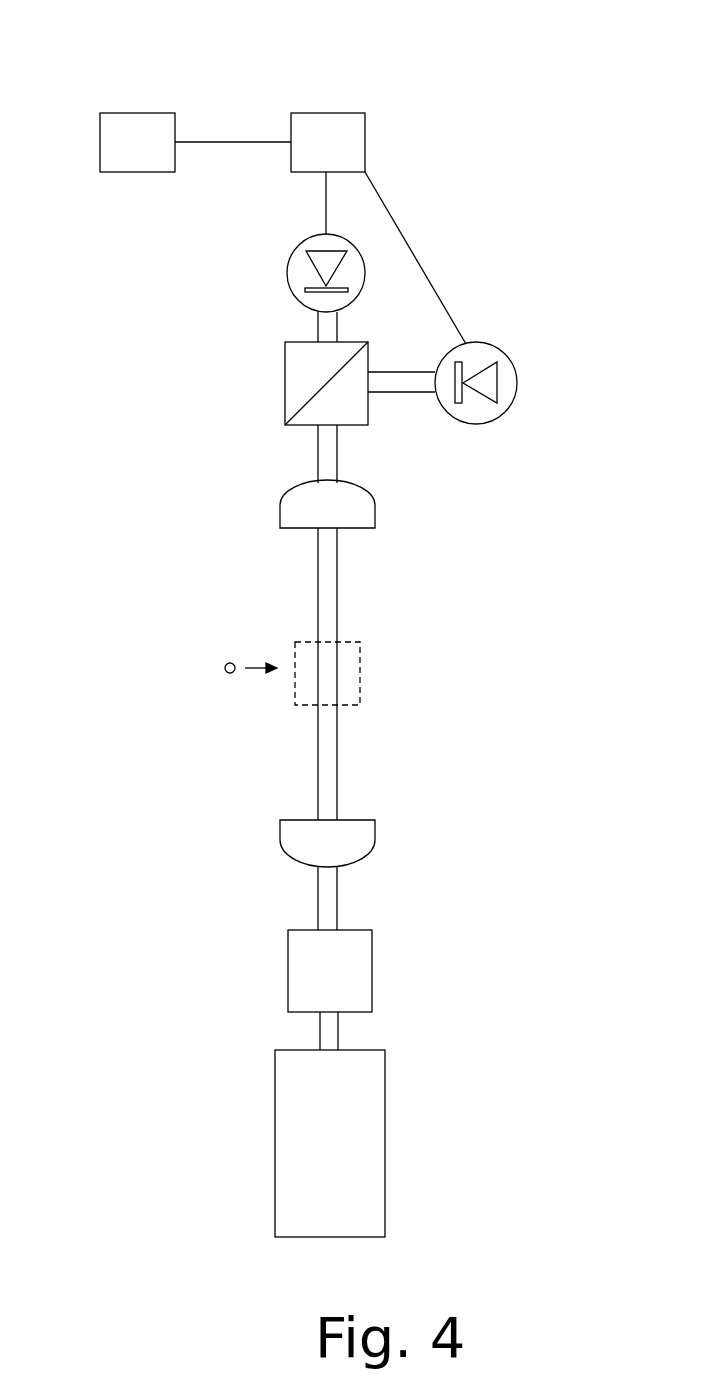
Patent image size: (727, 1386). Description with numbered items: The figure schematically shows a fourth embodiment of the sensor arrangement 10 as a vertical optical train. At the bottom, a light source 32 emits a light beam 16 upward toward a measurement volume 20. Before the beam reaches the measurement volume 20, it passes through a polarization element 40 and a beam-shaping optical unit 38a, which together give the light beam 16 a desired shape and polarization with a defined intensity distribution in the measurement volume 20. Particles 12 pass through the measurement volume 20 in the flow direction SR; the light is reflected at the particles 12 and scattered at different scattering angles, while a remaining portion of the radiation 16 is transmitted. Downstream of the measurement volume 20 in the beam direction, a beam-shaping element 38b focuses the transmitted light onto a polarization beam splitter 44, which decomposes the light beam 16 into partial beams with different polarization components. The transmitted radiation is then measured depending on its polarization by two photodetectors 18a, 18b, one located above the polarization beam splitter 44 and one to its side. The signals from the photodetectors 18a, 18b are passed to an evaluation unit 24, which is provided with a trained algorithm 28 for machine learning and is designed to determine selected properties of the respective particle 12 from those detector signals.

The sensor arrangement 10 is at (437, 115).
The particle 12 is at (225, 668).
The flow direction SR is at (257, 672).
The light beam 16 is at (323, 1032).
The photodetector 18a is at (288, 275).
The photodetector 18b is at (476, 423).
The measurement volume 20 is at (353, 688).
The evaluation unit 24 is at (365, 133).
The algorithm 28 is at (140, 172).
The light source 32 is at (278, 1130).
The beam-shaping optical unit 38a is at (353, 847).
The beam-shaping element 38b is at (355, 520).
The polarization element 40 is at (295, 970).
The polarization beam splitter 44 is at (285, 393).